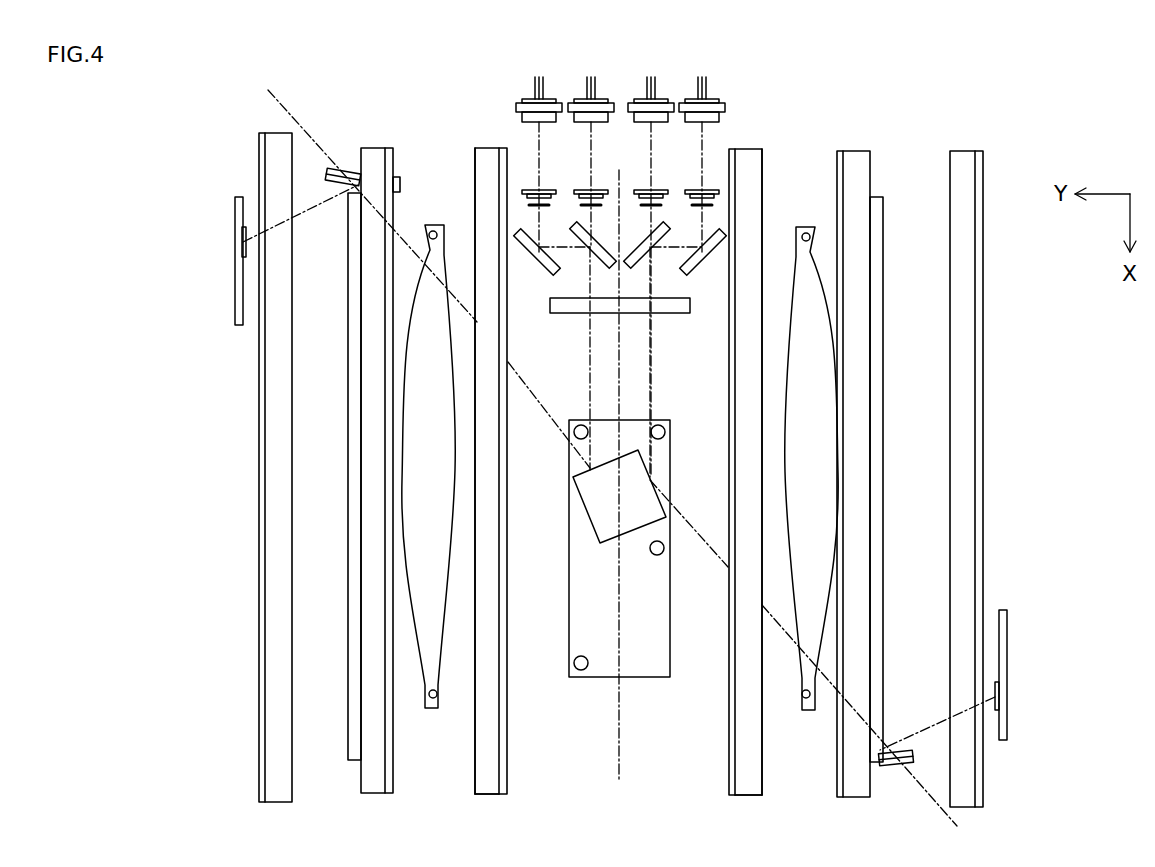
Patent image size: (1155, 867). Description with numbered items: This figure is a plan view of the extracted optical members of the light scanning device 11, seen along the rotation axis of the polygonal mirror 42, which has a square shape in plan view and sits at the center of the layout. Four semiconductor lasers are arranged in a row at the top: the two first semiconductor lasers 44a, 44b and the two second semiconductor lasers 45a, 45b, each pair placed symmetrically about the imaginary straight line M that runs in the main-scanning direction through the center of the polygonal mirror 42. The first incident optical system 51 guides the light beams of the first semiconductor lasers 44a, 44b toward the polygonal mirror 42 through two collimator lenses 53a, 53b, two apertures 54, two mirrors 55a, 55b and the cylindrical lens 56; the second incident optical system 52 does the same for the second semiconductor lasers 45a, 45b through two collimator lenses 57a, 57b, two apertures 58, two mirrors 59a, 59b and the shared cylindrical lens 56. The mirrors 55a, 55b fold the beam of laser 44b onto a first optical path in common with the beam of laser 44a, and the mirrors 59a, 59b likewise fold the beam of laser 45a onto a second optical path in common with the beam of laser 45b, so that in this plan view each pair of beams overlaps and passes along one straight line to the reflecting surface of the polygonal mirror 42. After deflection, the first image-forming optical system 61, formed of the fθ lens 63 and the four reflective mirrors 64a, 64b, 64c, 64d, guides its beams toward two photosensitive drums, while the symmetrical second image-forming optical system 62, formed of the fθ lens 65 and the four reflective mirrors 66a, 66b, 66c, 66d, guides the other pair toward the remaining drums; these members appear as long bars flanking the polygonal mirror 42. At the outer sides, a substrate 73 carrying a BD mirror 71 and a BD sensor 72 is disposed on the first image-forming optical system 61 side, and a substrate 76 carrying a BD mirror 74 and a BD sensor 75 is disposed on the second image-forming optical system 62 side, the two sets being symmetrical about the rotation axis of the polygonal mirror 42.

The light scanning device 11 is at (1034, 97).
The polygonal mirror 42 is at (633, 523).
The first semiconductor laser 44a is at (633, 100).
The first semiconductor laser 44b is at (688, 100).
The second semiconductor laser 45a is at (520, 100).
The second semiconductor laser 45b is at (583, 87).
The first incident optical system 51 is at (721, 87).
The second incident optical system 52 is at (519, 87).
The collimator lens 53a is at (656, 192).
The collimator lens 53b is at (714, 190).
The aperture 54 is at (660, 207).
The mirror 55a is at (660, 237).
The mirror 55b is at (705, 252).
The cylindrical lens 56 is at (552, 303).
The collimator lens 57a is at (530, 192).
The collimator lens 57b is at (582, 193).
The aperture 58 is at (598, 207).
The mirror 59a is at (530, 242).
The mirror 59b is at (578, 238).
The first image-forming optical system 61 is at (715, 762).
The second image-forming optical system 62 is at (520, 748).
The fθ lens 63 is at (798, 665).
The reflective mirror 64a is at (970, 320).
The reflective mirror 64b is at (877, 345).
The reflective mirror 64c is at (852, 163).
The reflective mirror 64d is at (753, 760).
The fθ lens 65 is at (445, 655).
The reflective mirror 66a is at (259, 520).
The reflective mirror 66b is at (351, 466).
The reflective mirror 66c is at (370, 602).
The reflective mirror 66d is at (487, 760).
The BD mirror 71 is at (888, 770).
The BD sensor 72 is at (997, 710).
The substrate 73 is at (1005, 636).
The BD mirror 74 is at (346, 168).
The BD sensor 75 is at (244, 227).
The substrate 76 is at (236, 295).